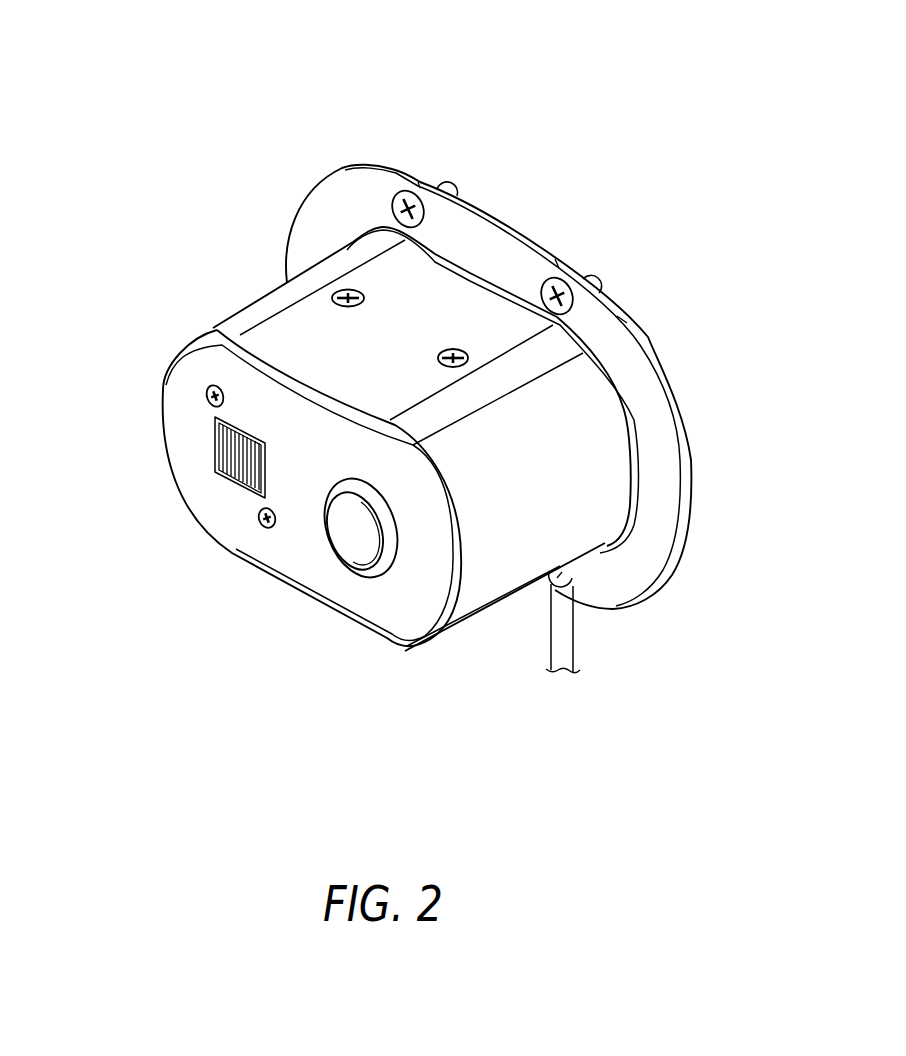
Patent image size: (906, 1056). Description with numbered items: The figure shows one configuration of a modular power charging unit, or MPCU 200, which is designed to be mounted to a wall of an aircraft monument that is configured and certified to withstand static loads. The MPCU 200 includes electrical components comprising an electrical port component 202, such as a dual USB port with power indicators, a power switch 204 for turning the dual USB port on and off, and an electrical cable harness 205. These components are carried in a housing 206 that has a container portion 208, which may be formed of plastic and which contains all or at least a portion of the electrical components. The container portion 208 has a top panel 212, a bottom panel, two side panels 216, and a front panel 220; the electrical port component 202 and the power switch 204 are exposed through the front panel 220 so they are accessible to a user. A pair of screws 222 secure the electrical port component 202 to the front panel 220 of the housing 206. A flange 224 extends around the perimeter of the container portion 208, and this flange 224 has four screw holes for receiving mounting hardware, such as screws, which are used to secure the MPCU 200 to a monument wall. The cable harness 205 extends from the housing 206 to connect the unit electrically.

The MPCU 200 is at (247, 151).
The electrical port component 202 is at (213, 443).
The power switch 204 is at (350, 537).
The electrical cable harness 205 is at (572, 645).
The housing 206 is at (368, 157).
The container portion 208 is at (488, 627).
The top panel 212 is at (434, 286).
The side panel 216 is at (607, 463).
The front panel 220 is at (392, 603).
The screws 222 is at (258, 513).
The flange 224 is at (630, 330).